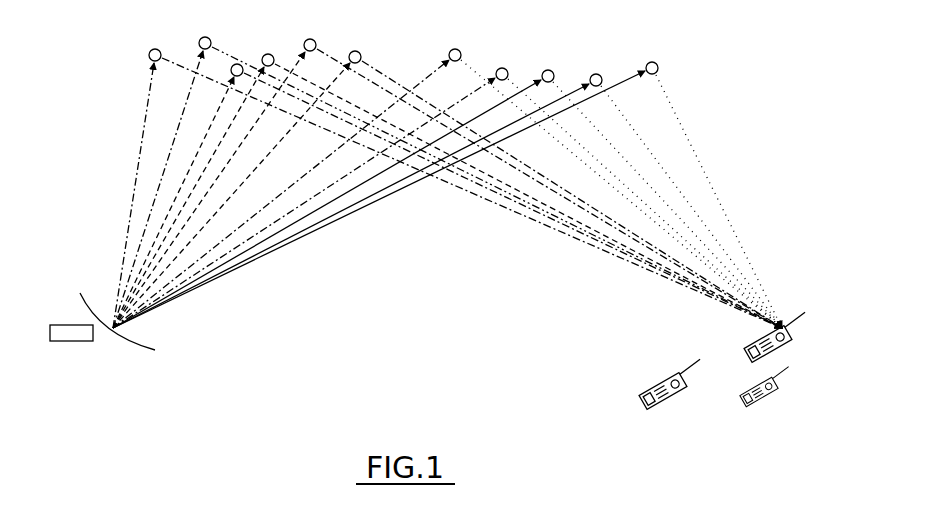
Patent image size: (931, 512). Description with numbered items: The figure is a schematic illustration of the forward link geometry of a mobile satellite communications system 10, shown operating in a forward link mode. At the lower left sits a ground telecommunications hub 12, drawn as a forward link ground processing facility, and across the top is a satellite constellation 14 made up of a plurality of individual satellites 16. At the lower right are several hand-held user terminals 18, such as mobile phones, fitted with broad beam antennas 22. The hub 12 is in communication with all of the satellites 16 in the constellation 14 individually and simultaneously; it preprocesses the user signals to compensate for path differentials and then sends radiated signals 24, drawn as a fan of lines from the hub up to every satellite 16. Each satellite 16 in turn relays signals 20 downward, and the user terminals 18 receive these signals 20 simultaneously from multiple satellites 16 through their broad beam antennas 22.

The mobile satellite communications system 10 is at (330, 28).
The ground telecommunications hub 12 is at (60, 323).
The satellite constellation 14 is at (578, 63).
The individual satellites 16 is at (460, 50).
The hand-held user terminals 18 is at (675, 373).
The signals 20 is at (660, 202).
The broad beam antennas 22 is at (725, 351).
The radiated signals 24 is at (168, 211).